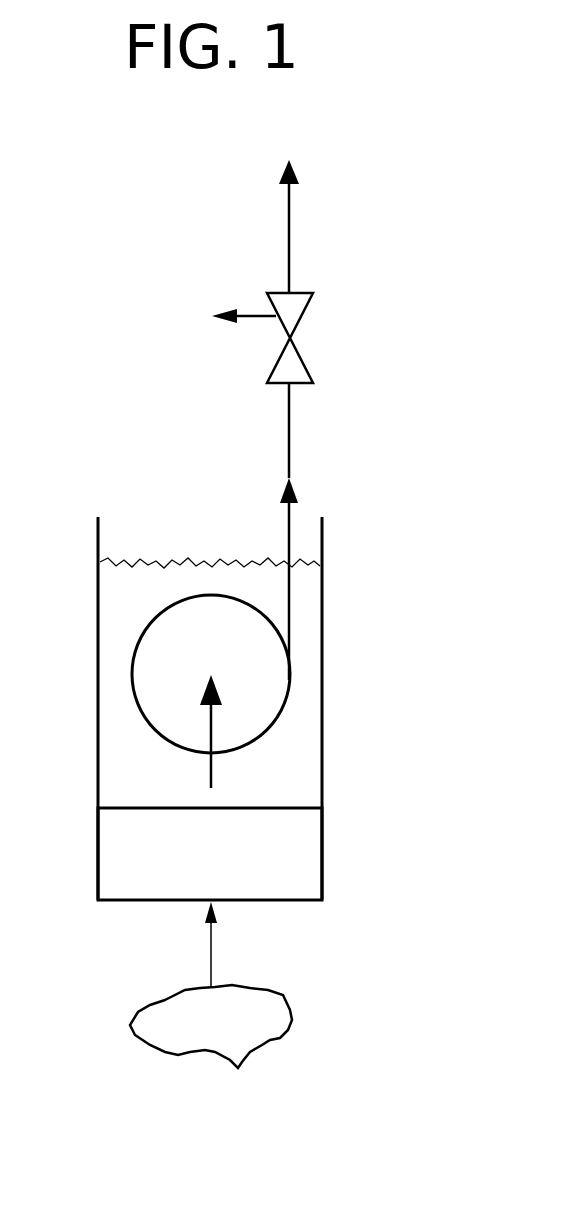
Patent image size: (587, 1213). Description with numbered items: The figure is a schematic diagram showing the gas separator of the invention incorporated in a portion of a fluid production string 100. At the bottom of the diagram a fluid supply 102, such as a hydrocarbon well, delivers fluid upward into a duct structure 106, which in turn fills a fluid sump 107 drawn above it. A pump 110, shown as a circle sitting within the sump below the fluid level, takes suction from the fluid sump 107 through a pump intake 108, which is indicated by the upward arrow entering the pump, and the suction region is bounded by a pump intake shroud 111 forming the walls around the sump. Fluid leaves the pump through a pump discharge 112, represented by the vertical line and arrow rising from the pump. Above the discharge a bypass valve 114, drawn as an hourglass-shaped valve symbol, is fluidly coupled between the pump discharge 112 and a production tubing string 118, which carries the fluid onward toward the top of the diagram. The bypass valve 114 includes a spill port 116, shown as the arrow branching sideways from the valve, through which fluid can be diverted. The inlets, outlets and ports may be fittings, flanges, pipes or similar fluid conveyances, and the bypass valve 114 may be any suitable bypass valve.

The fluid production string 100 is at (362, 88).
The fluid supply 102 is at (288, 993).
The duct structure 106 is at (323, 840).
The fluid sump 107 is at (300, 765).
The pump intake 108 is at (215, 710).
The pump 110 is at (193, 613).
The pump intake shroud 111 is at (98, 628).
The pump discharge 112 is at (292, 515).
The bypass valve 114 is at (313, 306).
The spill port 116 is at (253, 318).
The production tubing string 118 is at (289, 232).